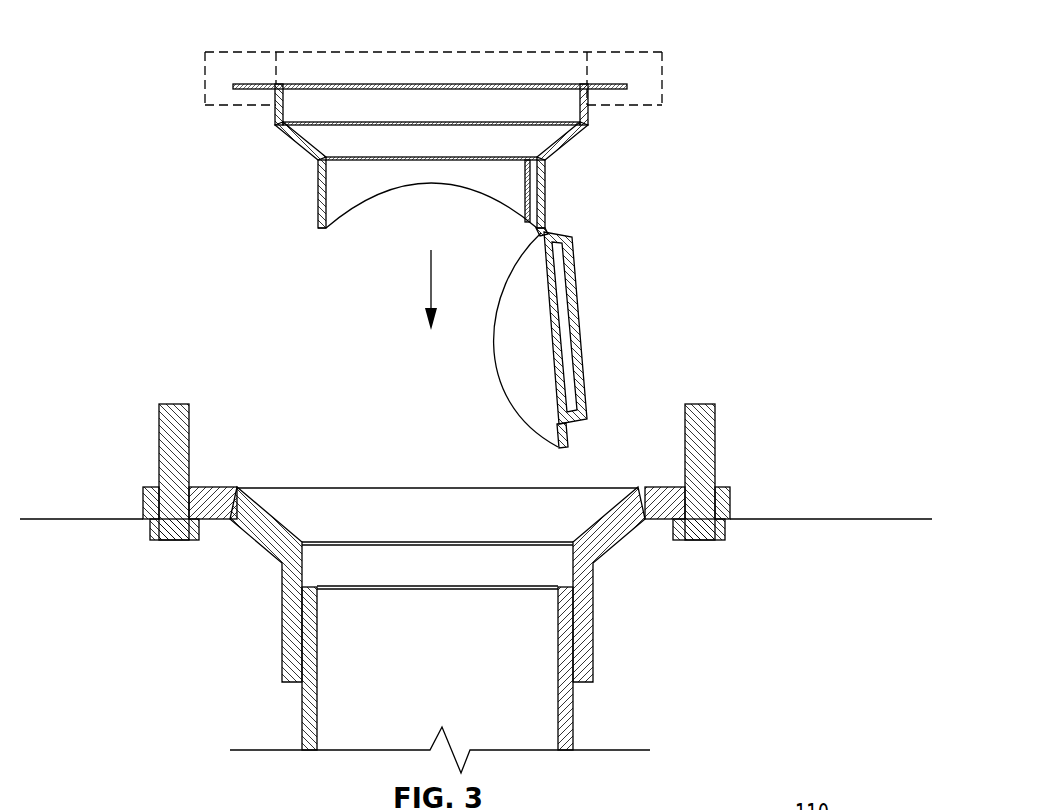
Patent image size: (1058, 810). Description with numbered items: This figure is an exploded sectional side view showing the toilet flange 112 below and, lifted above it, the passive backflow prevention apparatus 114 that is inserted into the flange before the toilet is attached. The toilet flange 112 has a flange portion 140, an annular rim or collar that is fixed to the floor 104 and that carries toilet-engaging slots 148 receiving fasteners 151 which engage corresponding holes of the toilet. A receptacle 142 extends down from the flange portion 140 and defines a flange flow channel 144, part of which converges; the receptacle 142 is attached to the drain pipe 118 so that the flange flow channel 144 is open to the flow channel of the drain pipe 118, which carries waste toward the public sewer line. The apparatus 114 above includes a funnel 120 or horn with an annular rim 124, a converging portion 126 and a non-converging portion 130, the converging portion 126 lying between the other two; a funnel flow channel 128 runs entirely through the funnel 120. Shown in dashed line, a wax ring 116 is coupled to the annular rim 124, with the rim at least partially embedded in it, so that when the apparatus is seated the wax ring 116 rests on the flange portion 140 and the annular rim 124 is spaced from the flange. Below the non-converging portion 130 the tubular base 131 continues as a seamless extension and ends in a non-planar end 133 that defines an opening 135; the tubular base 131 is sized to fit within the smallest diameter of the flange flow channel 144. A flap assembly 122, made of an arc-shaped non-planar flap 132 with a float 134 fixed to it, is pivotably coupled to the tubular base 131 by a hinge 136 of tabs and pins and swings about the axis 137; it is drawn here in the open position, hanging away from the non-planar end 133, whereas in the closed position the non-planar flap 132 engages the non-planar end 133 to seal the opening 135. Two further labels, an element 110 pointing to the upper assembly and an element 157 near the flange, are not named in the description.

The floor 104 is at (868, 519).
The lid assembly 110 is at (662, 28).
The toilet flange 112 is at (740, 482).
The passive backflow prevention apparatus 114 is at (184, 50).
The wax ring 116 is at (590, 62).
The drain pipe 118 is at (573, 718).
The funnel 120 is at (297, 144).
The flap assembly 122 is at (593, 259).
The annular rim 124 is at (612, 84).
The converging portion 126 is at (572, 137).
The funnel flow channel 128 is at (376, 189).
The non-converging portion 130 is at (318, 200).
The tubular base 131 is at (321, 239).
The non-planar flap 132 is at (521, 367).
The non-planar end 133 is at (500, 205).
The float 134 is at (581, 305).
The opening 135 is at (350, 220).
The hinge 136 is at (553, 208).
The axis 137 is at (545, 229).
The flange portion 140 is at (735, 495).
The receptacle 142 is at (303, 560).
The flange flow channel 144 is at (452, 659).
The toilet-engaging slots 148 is at (163, 500).
The fasteners 151 is at (705, 538).
The mounting block 157 is at (156, 532).